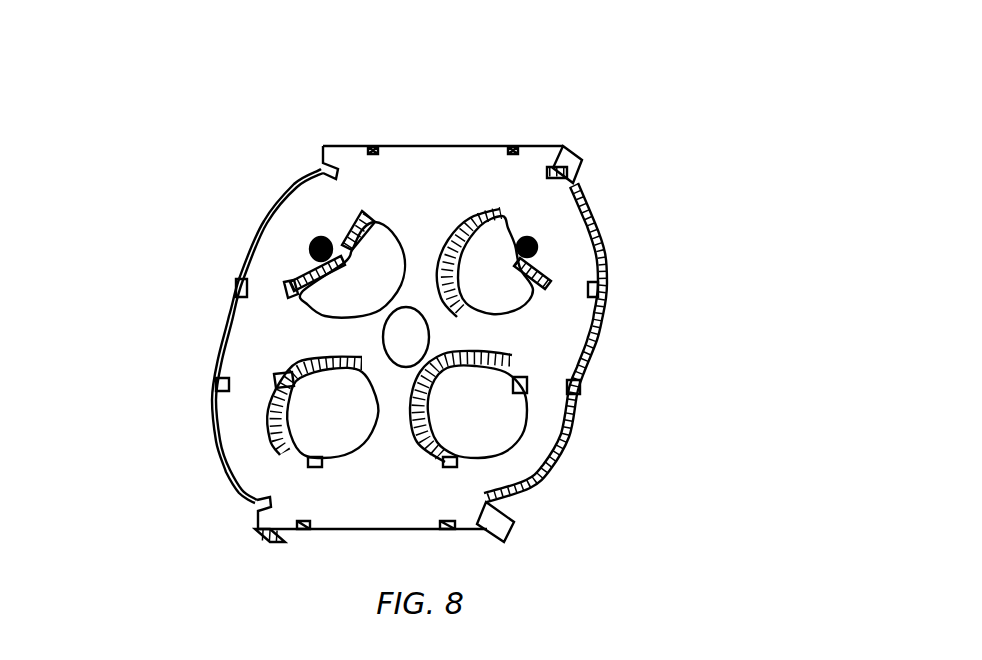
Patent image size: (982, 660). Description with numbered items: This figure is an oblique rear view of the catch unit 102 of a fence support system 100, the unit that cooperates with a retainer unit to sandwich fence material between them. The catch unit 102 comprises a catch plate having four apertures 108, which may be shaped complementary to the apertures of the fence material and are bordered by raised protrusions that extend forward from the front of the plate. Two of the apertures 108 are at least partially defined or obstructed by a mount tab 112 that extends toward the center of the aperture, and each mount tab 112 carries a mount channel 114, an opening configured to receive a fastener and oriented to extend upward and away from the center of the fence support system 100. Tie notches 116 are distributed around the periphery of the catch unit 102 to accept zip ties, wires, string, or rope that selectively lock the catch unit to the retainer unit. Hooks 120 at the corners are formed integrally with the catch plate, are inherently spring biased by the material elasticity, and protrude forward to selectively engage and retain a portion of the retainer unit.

The fence support system 100 is at (746, 160).
The catch unit 102 is at (567, 357).
The apertures 108 is at (464, 228).
The mount tab 112 is at (337, 233).
The mount channel 114 is at (320, 245).
The tie notches 116 is at (372, 150).
The hooks 120 is at (326, 163).